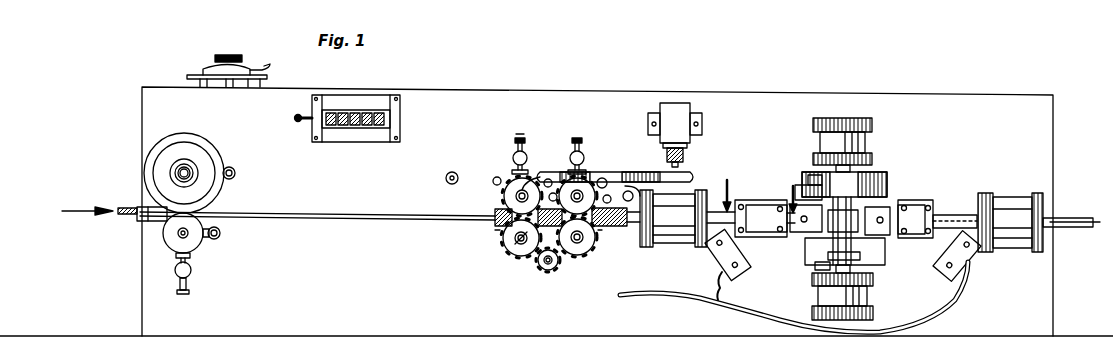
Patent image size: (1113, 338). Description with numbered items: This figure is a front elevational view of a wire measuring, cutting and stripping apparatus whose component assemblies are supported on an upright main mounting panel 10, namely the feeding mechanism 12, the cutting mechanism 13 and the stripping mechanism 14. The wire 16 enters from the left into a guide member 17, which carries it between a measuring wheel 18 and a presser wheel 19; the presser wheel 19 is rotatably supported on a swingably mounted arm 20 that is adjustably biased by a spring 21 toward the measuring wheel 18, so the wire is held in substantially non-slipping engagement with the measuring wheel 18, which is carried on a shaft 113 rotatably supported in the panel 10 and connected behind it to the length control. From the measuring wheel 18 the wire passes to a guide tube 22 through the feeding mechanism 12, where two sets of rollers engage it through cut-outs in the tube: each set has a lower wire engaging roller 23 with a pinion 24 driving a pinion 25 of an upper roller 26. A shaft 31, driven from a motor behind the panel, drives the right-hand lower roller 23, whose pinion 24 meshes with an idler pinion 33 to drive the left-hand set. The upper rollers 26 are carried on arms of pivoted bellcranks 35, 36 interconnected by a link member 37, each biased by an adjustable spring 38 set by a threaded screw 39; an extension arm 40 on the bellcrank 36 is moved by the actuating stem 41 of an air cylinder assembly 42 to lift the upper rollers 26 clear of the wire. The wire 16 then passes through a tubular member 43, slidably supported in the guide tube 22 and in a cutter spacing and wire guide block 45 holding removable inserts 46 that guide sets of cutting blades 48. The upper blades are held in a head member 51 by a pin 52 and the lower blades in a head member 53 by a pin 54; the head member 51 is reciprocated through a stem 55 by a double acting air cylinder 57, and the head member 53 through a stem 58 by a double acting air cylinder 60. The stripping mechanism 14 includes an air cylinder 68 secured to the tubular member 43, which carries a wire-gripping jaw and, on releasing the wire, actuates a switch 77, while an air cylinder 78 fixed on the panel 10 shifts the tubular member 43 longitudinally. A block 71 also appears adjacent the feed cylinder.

The main mounting panel 10 is at (968, 107).
The feeding mechanism 12 is at (544, 148).
The cutting mechanism 13 is at (888, 154).
The stripping mechanism 14 is at (716, 173).
The wire 16 is at (128, 207).
The guide member 17 is at (146, 221).
The measuring wheel 18 is at (183, 165).
The presser wheel 19 is at (176, 240).
The swingably mounted arm 20 is at (210, 242).
The spring 21 is at (190, 260).
The guide tube 22 is at (496, 212).
The lower wire engaging roller 23 is at (510, 245).
The pinion 24 is at (500, 238).
The pinion 25 is at (505, 182).
The upper roller 26 is at (508, 190).
The shaft 31 is at (520, 250).
The idler pinion 33 is at (550, 272).
The bellcrank 35 is at (540, 182).
The bellcrank 36 is at (630, 188).
The link member 37 is at (570, 143).
The adjustable spring 38 is at (512, 162).
The threaded screw 39 is at (518, 139).
The extension arm 40 is at (642, 171).
The actuating stem 41 is at (688, 160).
The air cylinder assembly 42 is at (672, 112).
The tubular member 43 is at (950, 217).
The cutter spacing and wire guide block 45 is at (890, 202).
The removable inserts 46 is at (925, 238).
The cutting blades 48 is at (862, 242).
The head member 51 is at (876, 178).
The pin 52 is at (810, 184).
The head member 53 is at (885, 262).
The pin 54 is at (812, 240).
The stem 55 is at (814, 172).
The double acting air cylinder 57 is at (872, 126).
The stem 58 is at (816, 268).
The double acting air cylinder 60 is at (873, 298).
The air cylinder 68 is at (778, 240).
The slide block 71 is at (758, 200).
The switch 77 is at (740, 270).
The air cylinder 78 is at (680, 236).
The shaft 113 is at (186, 170).